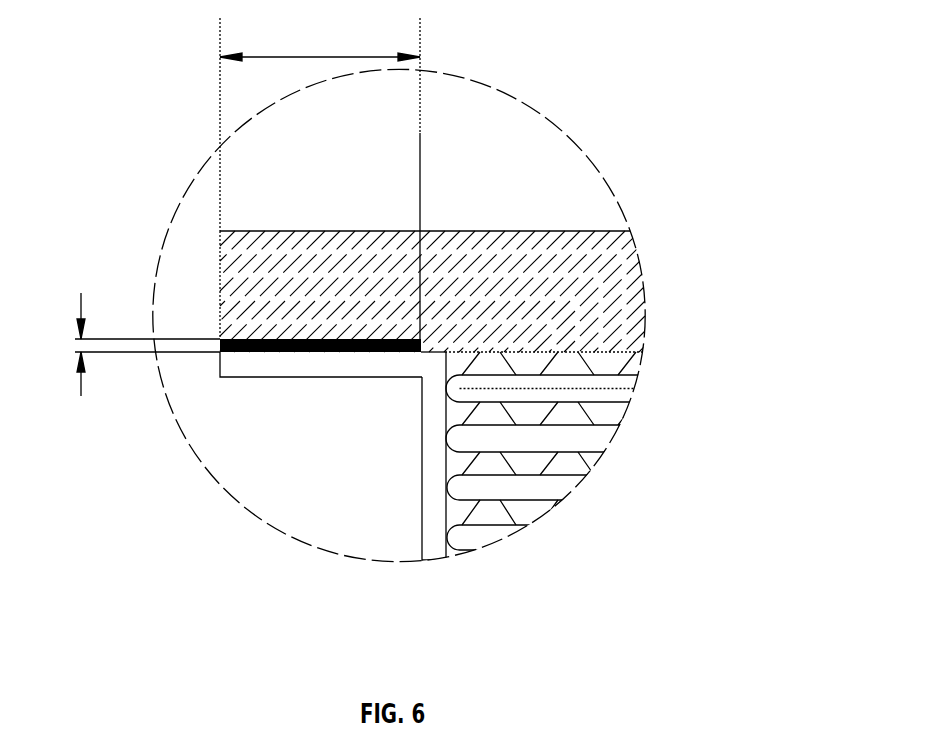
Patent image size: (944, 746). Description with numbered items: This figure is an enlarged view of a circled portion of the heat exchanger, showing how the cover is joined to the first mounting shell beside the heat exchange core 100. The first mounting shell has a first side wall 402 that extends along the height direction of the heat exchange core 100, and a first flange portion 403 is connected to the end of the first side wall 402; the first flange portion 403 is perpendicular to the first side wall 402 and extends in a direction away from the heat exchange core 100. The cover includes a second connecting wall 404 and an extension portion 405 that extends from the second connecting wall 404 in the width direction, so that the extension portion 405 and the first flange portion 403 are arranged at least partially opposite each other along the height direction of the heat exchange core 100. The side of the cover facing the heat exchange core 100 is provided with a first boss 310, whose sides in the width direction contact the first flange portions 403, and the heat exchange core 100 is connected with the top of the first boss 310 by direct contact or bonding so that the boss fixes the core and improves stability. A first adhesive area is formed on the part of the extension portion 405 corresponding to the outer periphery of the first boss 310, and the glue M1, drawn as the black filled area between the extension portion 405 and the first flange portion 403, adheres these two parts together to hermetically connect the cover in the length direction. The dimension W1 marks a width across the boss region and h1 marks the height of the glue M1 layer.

The heat exchange core 100 is at (583, 443).
The first boss 310 is at (437, 343).
The first side wall 402 is at (432, 443).
The first flange portion 403 is at (305, 365).
The second connecting wall 404 is at (628, 250).
The extension portion 405 is at (317, 290).
The glue M1 is at (238, 352).
The width W1 is at (320, 120).
The height h1 is at (126, 344).